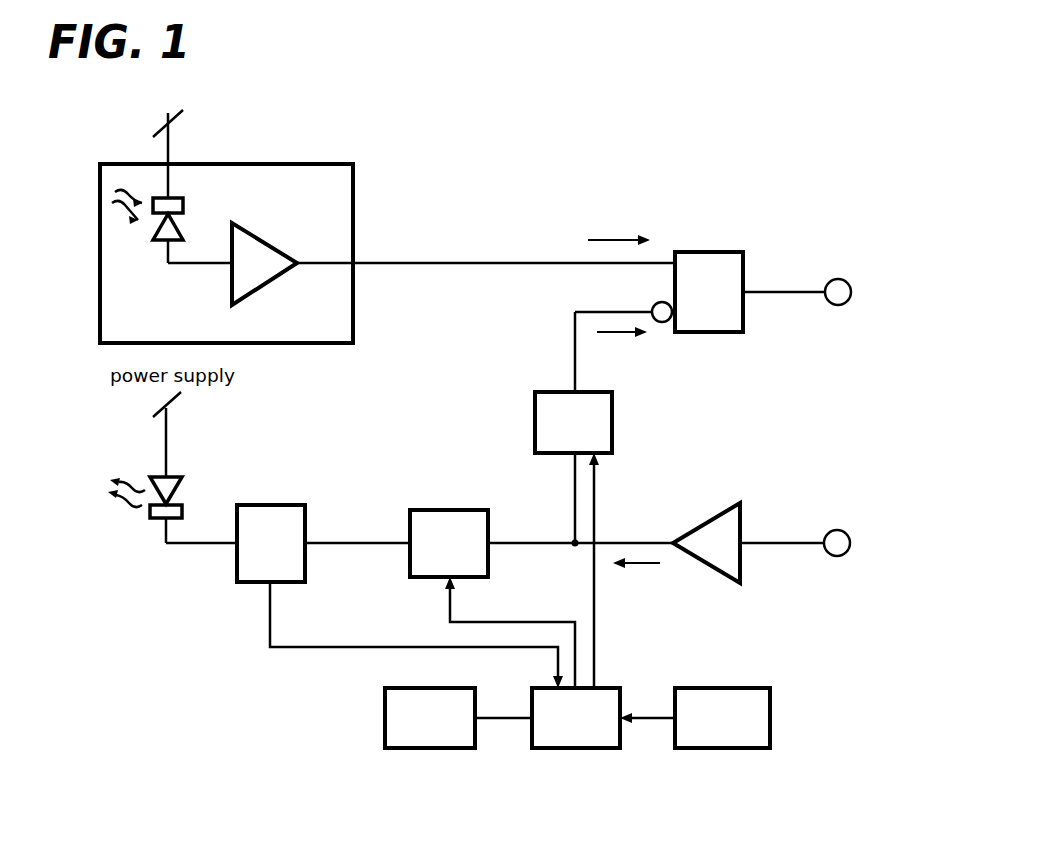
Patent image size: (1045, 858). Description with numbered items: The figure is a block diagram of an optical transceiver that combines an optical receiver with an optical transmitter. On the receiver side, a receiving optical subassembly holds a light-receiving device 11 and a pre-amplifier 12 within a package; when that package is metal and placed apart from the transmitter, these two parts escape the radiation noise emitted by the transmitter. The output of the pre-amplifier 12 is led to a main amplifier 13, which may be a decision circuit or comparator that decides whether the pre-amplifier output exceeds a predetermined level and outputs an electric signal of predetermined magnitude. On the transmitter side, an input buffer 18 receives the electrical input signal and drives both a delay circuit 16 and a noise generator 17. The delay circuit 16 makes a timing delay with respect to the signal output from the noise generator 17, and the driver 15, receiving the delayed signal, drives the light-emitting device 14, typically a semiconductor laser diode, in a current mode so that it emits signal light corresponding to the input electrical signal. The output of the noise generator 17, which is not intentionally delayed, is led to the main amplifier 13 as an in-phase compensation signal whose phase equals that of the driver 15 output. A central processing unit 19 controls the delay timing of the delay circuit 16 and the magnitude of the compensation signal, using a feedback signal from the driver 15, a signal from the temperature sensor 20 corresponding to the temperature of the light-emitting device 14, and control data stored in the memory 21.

The light-receiving device 11 is at (178, 200).
The pre-amplifier 12 is at (270, 246).
The main amplifier 13 is at (710, 252).
The light-emitting device 14 is at (150, 515).
The driver 15 is at (270, 505).
The delay circuit 16 is at (462, 510).
The noise generator 17 is at (612, 413).
The input buffer 18 is at (740, 522).
The central processing unit (CPU) 19 is at (563, 748).
The temperature sensor 20 is at (712, 748).
The memory 21 is at (440, 748).